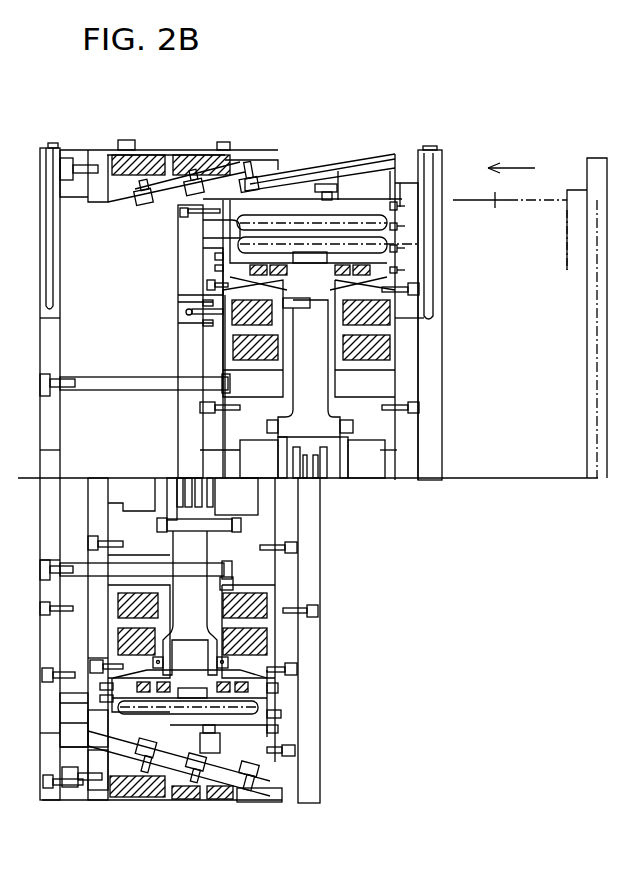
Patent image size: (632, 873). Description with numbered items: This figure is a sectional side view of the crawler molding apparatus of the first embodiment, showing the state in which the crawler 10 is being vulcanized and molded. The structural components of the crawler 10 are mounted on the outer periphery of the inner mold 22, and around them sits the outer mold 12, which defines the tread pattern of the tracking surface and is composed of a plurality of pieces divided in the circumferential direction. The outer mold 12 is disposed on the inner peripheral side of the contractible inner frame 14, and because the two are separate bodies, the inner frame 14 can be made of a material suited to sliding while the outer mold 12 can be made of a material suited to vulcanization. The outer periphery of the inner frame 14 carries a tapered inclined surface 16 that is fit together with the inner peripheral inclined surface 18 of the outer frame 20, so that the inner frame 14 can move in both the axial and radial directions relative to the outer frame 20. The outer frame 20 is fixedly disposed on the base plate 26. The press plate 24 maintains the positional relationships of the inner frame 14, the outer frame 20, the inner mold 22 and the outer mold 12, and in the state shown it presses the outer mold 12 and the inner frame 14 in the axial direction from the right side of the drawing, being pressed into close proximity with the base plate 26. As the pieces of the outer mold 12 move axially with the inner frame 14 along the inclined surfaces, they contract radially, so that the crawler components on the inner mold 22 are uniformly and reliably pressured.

The crawler 10 is at (420, 244).
The outer mold 12 is at (365, 207).
The inner frame 14 is at (360, 183).
The inclined surface 16 is at (297, 162).
The inner peripheral inclined surface 18 is at (110, 205).
The outer frame 20 is at (170, 176).
The inner mold 22 is at (365, 262).
The press plate 24 is at (318, 500).
The base plate 26 is at (48, 738).